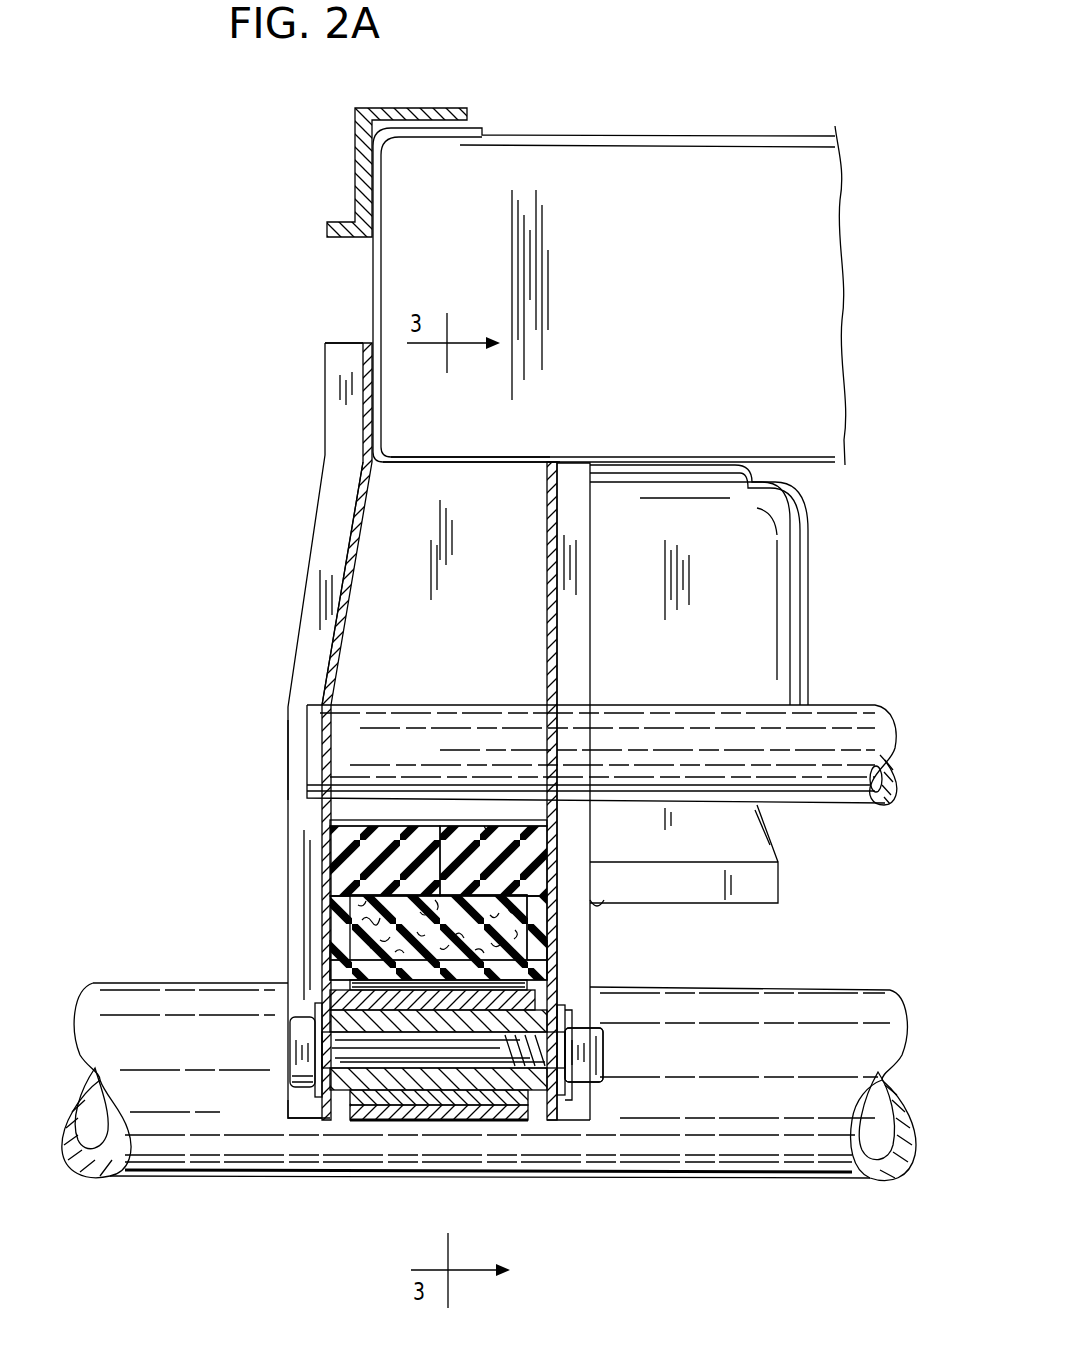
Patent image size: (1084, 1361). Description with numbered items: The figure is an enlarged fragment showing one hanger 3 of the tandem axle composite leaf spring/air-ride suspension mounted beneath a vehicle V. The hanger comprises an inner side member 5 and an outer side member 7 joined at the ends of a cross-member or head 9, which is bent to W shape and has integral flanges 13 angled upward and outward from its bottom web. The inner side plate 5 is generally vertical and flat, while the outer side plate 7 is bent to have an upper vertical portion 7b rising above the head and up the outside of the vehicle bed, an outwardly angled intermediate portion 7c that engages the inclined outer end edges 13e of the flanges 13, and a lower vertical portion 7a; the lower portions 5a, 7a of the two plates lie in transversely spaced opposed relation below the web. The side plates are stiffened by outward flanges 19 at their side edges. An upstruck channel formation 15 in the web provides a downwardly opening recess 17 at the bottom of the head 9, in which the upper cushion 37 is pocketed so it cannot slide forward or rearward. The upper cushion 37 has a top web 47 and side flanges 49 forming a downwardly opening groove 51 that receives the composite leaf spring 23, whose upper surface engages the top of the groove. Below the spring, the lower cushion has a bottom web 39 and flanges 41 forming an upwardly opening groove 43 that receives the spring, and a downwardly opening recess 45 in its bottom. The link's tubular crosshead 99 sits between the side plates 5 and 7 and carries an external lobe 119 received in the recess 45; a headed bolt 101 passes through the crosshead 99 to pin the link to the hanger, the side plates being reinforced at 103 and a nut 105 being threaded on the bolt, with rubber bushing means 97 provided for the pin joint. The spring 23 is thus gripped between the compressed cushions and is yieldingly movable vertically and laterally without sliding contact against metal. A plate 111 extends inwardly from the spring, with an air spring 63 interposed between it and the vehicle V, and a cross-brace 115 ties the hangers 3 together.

The vehicle V is at (703, 118).
The hanger 3 is at (258, 748).
The inner side member 5 is at (565, 518).
The lower portion of inner side plate 5a is at (555, 1130).
The outer side member 7 is at (340, 542).
The lower vertical portion of outer side plate 7a is at (328, 1125).
The upper vertical portion of outer side plate 7b is at (363, 420).
The angled intermediate portion of outer side plate 7c is at (333, 620).
The head 9 is at (515, 478).
The flanges of head 13 is at (490, 523).
The inclined outer end edges of flanges 13e is at (343, 653).
The channel formation 15 is at (447, 830).
The recess or groove 17 is at (492, 830).
The stiffening flanges 19 is at (345, 457).
The composite leaf spring 23 is at (350, 957).
The upper cushion 37 is at (405, 930).
The bottom web of lower cushion 39 is at (548, 972).
The flanges of lower cushion 41 is at (340, 947).
The groove of lower cushion 43 is at (548, 868).
The recess in lower cushion 45 is at (395, 1130).
The top web of upper cushion 47 is at (370, 885).
The flanges of upper cushion 49 is at (340, 912).
The groove of upper cushion 51 is at (378, 830).
The air spring 63 is at (808, 637).
The rubber bushing means 97 is at (485, 1135).
The tubular crosshead 99 is at (410, 1050).
The headed bolt 101 is at (292, 1050).
The reinforcement 103 is at (315, 1095).
The nut 105 is at (575, 1022).
The plate 111 is at (767, 883).
The cross-brace 115 is at (845, 710).
The lobe 119 is at (347, 990).